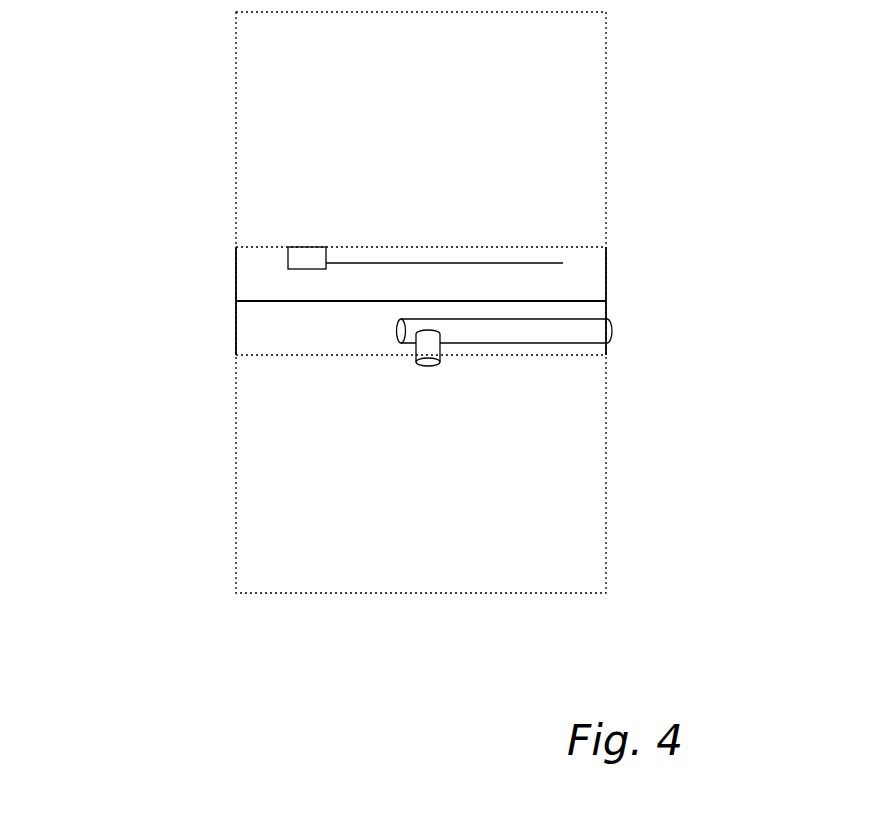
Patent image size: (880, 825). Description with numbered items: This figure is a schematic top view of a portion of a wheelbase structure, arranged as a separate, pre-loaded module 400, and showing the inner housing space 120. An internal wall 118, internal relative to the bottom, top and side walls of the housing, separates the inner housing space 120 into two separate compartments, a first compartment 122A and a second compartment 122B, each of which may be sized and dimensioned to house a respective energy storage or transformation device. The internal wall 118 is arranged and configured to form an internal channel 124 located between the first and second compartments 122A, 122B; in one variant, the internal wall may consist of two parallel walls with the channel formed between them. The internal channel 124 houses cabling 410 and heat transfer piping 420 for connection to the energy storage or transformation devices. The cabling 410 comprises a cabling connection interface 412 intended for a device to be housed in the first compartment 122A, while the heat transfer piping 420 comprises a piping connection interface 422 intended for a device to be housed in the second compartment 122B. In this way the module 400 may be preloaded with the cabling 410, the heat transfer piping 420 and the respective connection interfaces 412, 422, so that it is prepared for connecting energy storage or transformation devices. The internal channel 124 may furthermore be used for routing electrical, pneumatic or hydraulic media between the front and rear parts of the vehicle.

The module 400 is at (192, 304).
The internal wall 118 is at (263, 301).
The inner housing space 120 is at (572, 562).
The first compartment 122A is at (517, 122).
The second compartment 122B is at (348, 500).
The internal channel 124 is at (650, 318).
The cabling 410 is at (563, 263).
The cabling connection interface 412 is at (305, 253).
The heat transfer piping 420 is at (612, 343).
The piping connection interface 422 is at (428, 367).